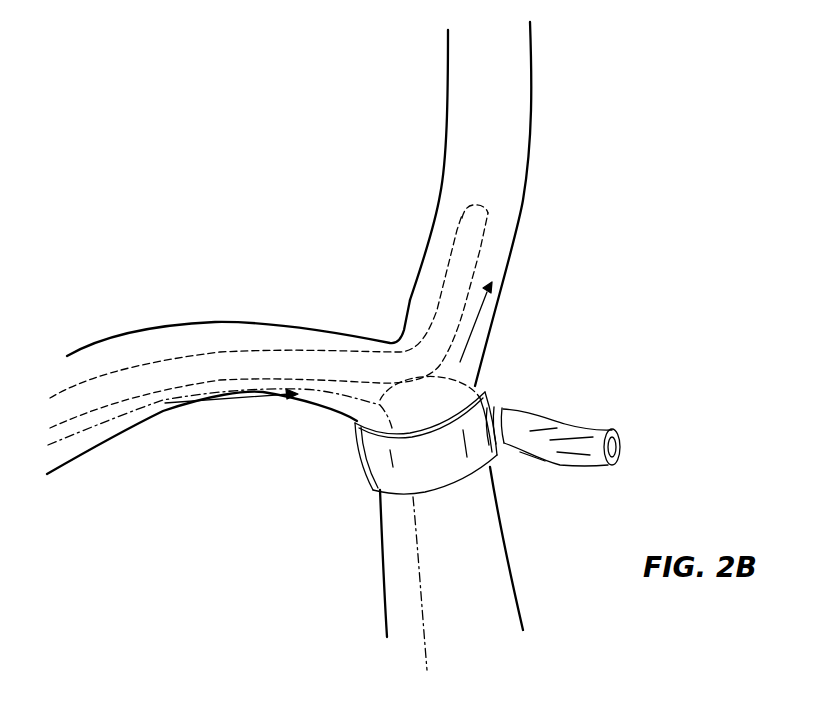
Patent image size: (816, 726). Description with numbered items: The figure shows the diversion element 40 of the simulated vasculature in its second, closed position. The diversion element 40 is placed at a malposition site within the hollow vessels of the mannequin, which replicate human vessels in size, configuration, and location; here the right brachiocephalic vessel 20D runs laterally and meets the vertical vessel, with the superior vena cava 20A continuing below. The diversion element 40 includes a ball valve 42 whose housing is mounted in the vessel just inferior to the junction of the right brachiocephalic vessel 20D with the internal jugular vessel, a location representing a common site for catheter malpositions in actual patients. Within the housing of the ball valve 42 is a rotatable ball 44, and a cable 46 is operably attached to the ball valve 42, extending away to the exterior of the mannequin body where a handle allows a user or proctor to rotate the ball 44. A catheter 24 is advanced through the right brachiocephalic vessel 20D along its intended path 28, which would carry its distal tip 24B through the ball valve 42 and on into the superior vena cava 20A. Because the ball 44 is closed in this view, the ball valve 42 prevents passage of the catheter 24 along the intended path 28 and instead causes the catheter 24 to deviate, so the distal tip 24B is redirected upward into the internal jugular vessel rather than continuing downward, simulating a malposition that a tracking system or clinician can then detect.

The right brachiocephalic vessel 20D is at (160, 345).
The superior vena cava 20A is at (502, 563).
The catheter 24 is at (313, 360).
The distal tip of catheter 24B is at (476, 207).
The intended path 28 is at (83, 428).
The diversion element 40 is at (354, 467).
The ball valve 42 is at (408, 467).
The rotatable ball 44 is at (365, 404).
The cable 46 is at (560, 423).